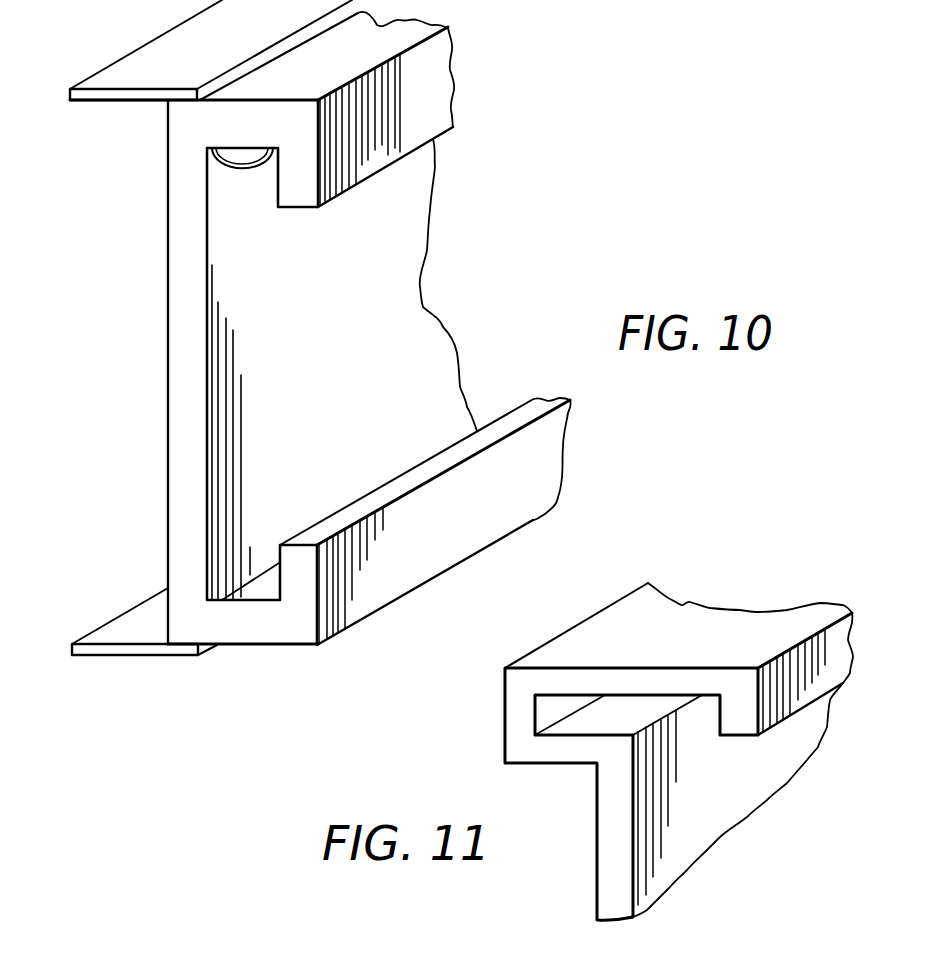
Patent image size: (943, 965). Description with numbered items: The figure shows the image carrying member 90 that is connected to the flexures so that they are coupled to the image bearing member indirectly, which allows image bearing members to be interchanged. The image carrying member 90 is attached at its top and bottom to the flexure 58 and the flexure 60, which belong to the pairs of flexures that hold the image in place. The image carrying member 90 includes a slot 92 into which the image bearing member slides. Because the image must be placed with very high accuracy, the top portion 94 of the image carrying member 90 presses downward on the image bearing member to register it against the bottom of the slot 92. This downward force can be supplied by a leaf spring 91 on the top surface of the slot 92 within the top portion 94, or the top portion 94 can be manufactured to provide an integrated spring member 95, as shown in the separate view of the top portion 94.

In FIG. 10, the flexure 58 is at (110, 103).
In FIG. 10, the flexure 60 is at (97, 657).
In FIG. 10, the image carrying member 90 is at (410, 330).
In FIG. 10, the leaf spring 91 is at (242, 170).
In FIG. 10, the slot 92 is at (232, 453).
In FIG. 10, the top portion 94 is at (427, 101).
In FIG. 11, the top portion 94 is at (825, 667).
In FIG. 11, the integrated spring member 95 is at (505, 715).